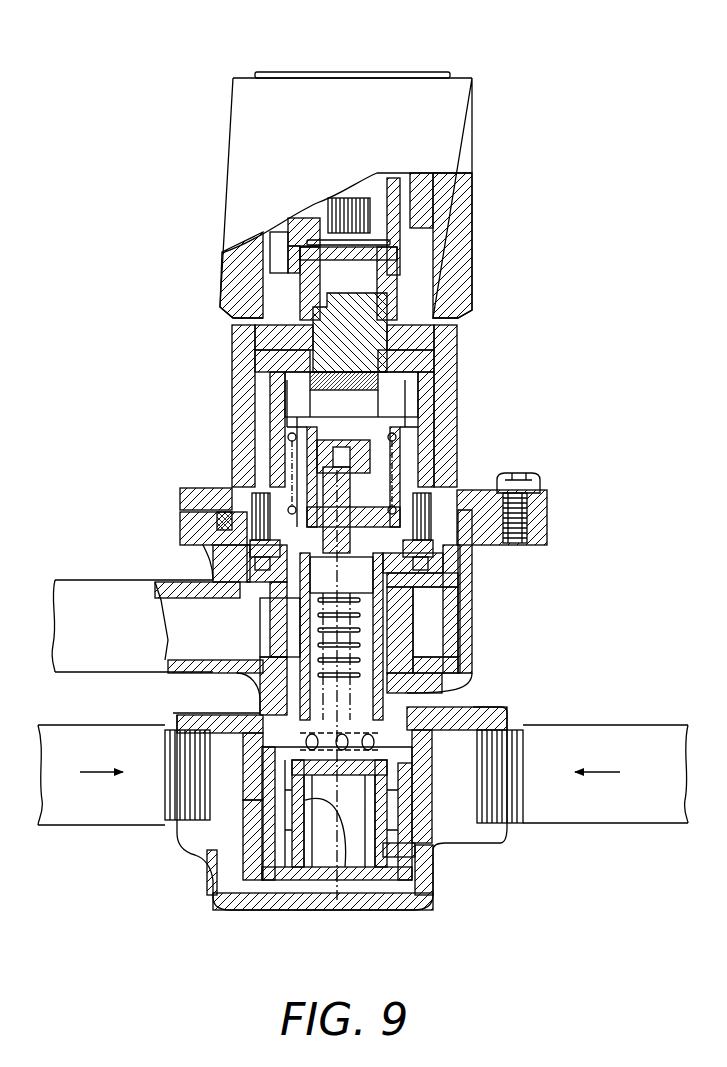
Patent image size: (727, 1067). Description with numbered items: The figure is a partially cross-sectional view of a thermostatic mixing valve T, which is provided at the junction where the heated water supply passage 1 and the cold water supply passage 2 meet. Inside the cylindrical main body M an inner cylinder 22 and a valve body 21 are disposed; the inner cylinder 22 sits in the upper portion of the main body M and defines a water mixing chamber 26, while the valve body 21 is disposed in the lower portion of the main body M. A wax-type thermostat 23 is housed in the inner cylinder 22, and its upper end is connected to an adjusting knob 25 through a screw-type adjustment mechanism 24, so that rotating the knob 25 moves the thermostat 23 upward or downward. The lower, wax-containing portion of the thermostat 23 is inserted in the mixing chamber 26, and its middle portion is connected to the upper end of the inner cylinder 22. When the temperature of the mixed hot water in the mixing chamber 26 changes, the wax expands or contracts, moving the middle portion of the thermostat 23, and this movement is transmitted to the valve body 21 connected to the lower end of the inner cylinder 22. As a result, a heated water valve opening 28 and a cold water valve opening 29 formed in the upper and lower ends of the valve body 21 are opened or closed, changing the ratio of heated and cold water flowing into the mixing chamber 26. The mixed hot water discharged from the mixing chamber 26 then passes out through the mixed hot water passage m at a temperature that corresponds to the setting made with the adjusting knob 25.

The mixing valve T is at (532, 115).
The main body M is at (482, 623).
The mixed hot water passage m is at (80, 583).
The heated water supply passage 1 is at (83, 827).
The cold water supply passage 2 is at (630, 827).
The valve body 21 is at (343, 873).
The inner cylinder 22 is at (387, 663).
The thermostat 23 is at (320, 650).
The adjustment mechanism 24 is at (290, 398).
The adjusting knob 25 is at (228, 168).
The water mixing chamber 26 is at (422, 634).
The heated water valve opening 28 is at (256, 818).
The cold water valve opening 29 is at (375, 745).